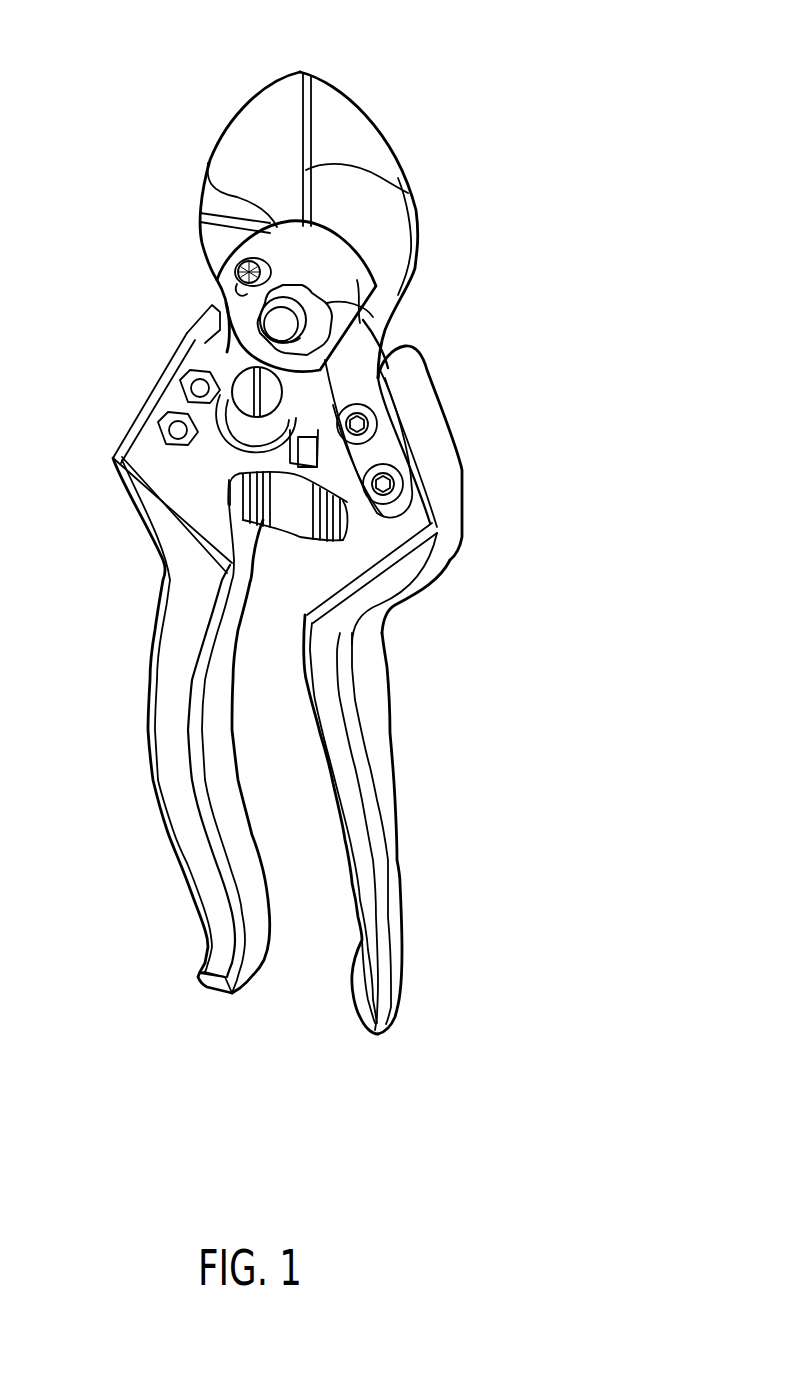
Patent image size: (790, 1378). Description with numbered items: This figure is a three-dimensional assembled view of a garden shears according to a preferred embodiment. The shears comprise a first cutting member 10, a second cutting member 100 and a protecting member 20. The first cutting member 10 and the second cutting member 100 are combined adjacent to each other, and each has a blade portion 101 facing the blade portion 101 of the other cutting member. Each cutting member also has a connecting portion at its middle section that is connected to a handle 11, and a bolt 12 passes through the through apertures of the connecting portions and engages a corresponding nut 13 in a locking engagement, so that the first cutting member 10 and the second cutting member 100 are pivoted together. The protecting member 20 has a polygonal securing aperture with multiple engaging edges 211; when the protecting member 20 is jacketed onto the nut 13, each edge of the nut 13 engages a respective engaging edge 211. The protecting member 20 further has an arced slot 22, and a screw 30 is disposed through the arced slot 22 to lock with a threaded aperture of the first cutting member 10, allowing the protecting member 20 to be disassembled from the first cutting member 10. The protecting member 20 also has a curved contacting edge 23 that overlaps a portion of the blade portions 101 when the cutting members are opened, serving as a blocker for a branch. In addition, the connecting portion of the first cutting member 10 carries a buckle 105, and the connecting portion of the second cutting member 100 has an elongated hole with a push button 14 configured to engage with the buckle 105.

The first cutting member 10 is at (246, 78).
The second cutting member 100 is at (359, 92).
The blade portion 101 is at (392, 189).
The contacting edge 23 is at (209, 164).
The protecting member 20 is at (352, 258).
The screw 30 is at (229, 250).
The arced slot 22 is at (222, 287).
The nut 13 is at (340, 302).
The engaging edge 211 is at (295, 344).
The bolt 12 is at (378, 414).
The buckle 105 is at (230, 363).
The push button 14 is at (240, 405).
The handle 11 is at (163, 732).